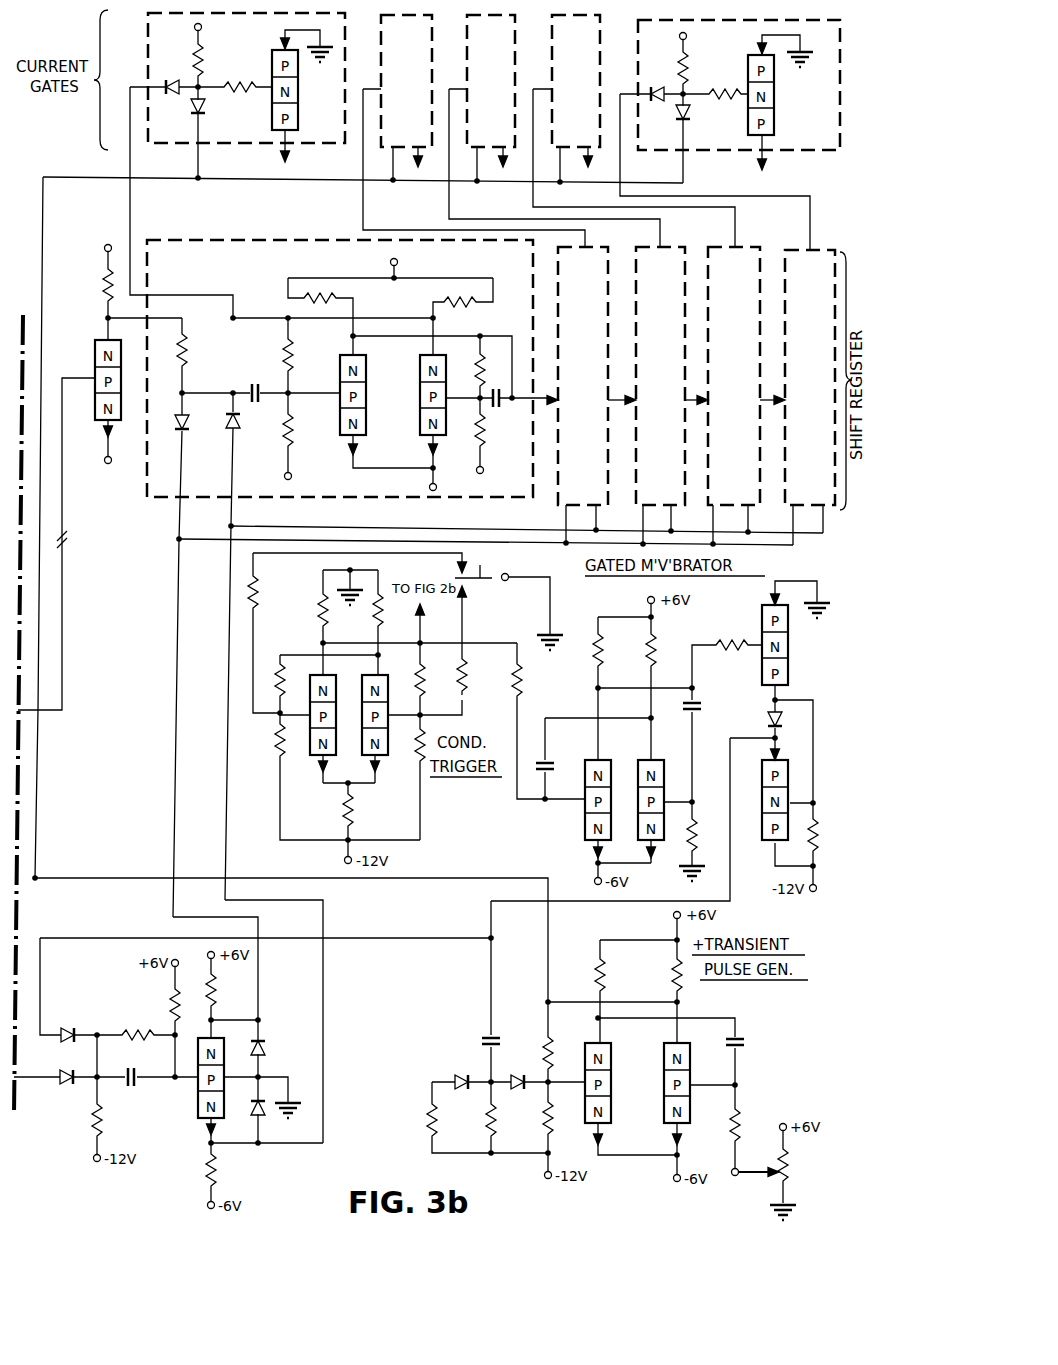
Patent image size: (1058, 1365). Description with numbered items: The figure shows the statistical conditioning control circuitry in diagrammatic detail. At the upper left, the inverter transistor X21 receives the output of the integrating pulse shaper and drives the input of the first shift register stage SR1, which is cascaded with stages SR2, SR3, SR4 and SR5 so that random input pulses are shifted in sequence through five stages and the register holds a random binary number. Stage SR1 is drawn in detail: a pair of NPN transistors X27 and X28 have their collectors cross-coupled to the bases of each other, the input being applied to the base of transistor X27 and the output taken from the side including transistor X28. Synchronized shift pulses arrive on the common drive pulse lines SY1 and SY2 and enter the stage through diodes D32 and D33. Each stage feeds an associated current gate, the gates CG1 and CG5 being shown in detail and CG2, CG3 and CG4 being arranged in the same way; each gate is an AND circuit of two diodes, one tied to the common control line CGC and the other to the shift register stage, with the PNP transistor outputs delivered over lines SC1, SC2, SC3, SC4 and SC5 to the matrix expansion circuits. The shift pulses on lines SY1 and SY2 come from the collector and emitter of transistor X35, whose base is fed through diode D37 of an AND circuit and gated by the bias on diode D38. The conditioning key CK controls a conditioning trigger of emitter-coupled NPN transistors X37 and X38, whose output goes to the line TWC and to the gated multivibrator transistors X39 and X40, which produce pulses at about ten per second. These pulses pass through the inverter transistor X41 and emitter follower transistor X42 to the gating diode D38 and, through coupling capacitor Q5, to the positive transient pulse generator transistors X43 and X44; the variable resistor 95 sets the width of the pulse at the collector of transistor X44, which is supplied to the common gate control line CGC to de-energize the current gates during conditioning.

The current gate CG1 is at (148, 30).
The current gate CG2 is at (381, 40).
The current gate CG3 is at (467, 40).
The current gate CG4 is at (552, 40).
The current gate CG5 is at (638, 45).
The current gate output line SC1 is at (290, 156).
The current gate output line SC2 is at (434, 160).
The current gate output line SC3 is at (518, 160).
The current gate output line SC4 is at (603, 160).
The current gate output line SC5 is at (758, 164).
The common gate control line CGC is at (290, 180).
The first shift register stage SR1 is at (352, 561).
The shift register stage SR2 is at (590, 248).
The shift register stage SR3 is at (688, 260).
The shift register stage SR4 is at (762, 260).
The shift register stage SR5 is at (822, 258).
The inverter transistor X21 is at (95, 362).
The NPN transistor X27 is at (340, 376).
The NPN transistor X28 is at (420, 376).
The diode D32 is at (187, 430).
The diode D33 is at (239, 430).
The synchronized drive pulse line SY1 is at (176, 602).
The synchronized drive pulse line SY2 is at (226, 602).
The conditioning key CK is at (486, 582).
The line TWC is at (406, 722).
The NPN transistor X37 is at (312, 762).
The NPN transistor X38 is at (384, 762).
The transistor X39 is at (586, 840).
The transistor X40 is at (664, 834).
The inverter transistor X41 is at (790, 676).
The emitter follower transistor X42 is at (764, 838).
The PNP transistor X35 is at (197, 1098).
The diode D37 is at (69, 1086).
The diode D38 is at (66, 1031).
The coupling capacitor Q5 is at (483, 1036).
The transistor X43 is at (612, 1088).
The transistor X44 is at (664, 1080).
The variable resistor 95 is at (750, 1167).